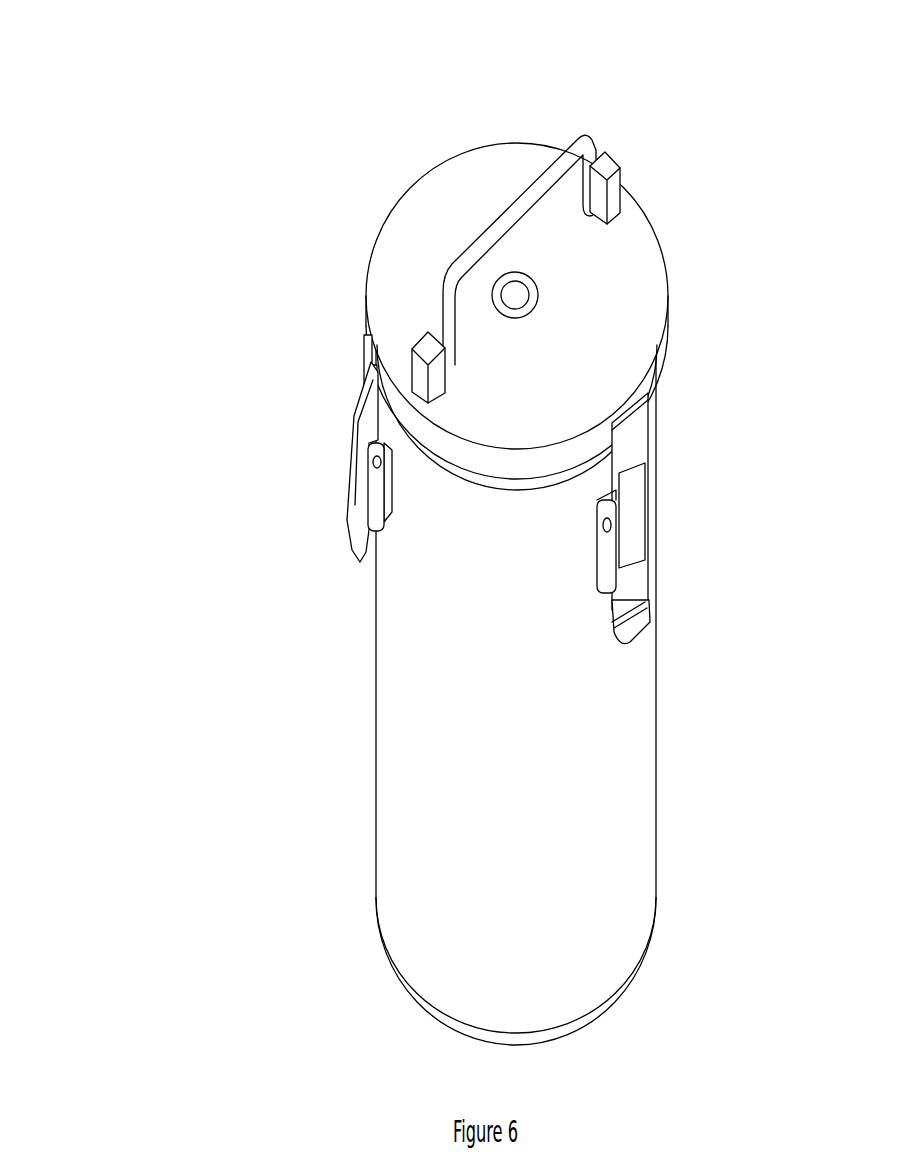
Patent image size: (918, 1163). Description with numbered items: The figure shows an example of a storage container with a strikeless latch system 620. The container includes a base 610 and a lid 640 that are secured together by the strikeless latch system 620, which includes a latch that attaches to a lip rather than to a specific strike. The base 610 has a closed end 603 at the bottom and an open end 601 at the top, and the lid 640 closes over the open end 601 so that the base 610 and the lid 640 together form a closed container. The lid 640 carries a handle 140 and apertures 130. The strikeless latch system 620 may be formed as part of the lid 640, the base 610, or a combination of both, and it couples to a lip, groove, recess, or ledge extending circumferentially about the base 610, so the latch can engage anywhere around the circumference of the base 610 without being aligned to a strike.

The handle 140 is at (497, 223).
The lid 640 is at (642, 243).
The apertures 130 is at (537, 282).
The open end 601 is at (368, 142).
The strikeless latch system 620 is at (340, 465).
The base 610 is at (386, 720).
The closed end 603 is at (413, 1013).